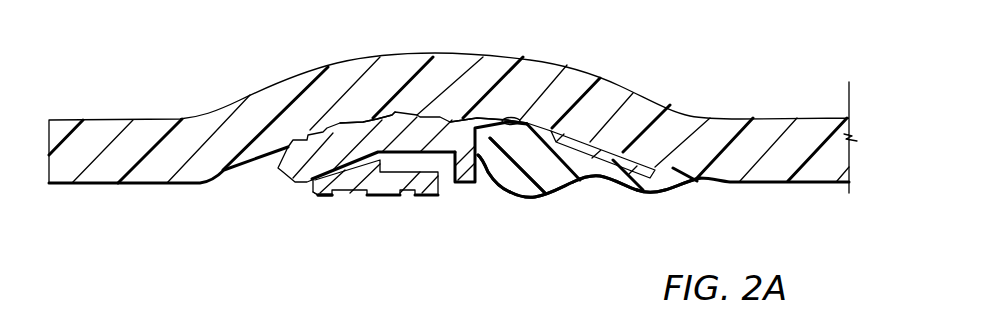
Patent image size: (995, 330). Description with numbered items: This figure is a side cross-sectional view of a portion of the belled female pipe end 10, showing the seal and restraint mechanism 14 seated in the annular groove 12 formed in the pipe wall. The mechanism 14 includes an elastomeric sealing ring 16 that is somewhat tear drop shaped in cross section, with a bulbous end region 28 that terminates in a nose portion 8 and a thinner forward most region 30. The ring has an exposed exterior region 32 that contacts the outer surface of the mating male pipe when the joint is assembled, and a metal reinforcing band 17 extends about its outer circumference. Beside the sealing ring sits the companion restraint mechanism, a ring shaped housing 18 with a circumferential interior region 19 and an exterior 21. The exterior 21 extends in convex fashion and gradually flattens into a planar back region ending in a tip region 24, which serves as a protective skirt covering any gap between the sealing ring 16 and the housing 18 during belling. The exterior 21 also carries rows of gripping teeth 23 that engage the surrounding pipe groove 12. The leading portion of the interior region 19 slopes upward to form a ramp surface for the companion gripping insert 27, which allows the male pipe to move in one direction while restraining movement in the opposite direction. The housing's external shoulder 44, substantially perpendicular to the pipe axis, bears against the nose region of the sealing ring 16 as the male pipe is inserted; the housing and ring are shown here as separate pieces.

The belled female pipe end 10 is at (162, 90).
The seal and restraint mechanism 14 is at (399, 70).
The gripping teeth 23 is at (316, 132).
The exterior 21 is at (356, 118).
The ring shaped housing 18 is at (283, 173).
The nose portion 8 is at (470, 126).
The tip region 24 is at (484, 146).
The annular groove 12 is at (532, 117).
The metal reinforcing band 17 is at (603, 145).
The circumferential interior region 19 is at (370, 160).
The companion gripping insert 27 is at (322, 196).
The external shoulder 44 is at (485, 158).
The bulbous end region 28 is at (504, 193).
The exposed exterior region 32 is at (535, 196).
The sealing ring 16 is at (567, 181).
The forward most region 30 is at (632, 190).